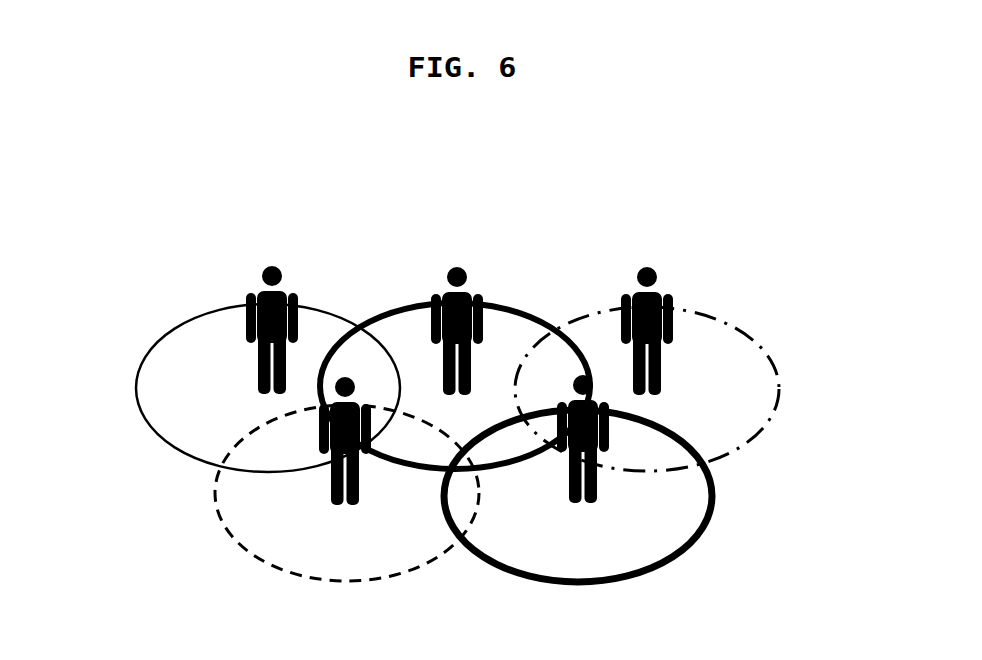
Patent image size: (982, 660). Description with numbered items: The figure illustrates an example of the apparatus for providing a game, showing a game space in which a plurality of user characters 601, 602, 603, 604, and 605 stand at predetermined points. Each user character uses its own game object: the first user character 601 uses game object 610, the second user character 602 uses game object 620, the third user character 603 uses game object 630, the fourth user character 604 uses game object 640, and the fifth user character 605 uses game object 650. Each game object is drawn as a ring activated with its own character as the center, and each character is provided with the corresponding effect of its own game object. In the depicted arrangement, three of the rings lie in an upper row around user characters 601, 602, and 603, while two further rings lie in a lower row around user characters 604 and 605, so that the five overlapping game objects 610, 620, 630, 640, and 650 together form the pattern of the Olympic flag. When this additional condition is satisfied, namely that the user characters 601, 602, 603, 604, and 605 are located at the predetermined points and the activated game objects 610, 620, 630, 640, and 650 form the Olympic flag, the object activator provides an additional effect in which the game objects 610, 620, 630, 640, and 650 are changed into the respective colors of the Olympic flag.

The user character 601 is at (272, 266).
The user character 602 is at (457, 267).
The user character 603 is at (647, 267).
The user character 604 is at (340, 506).
The user character 605 is at (590, 506).
The game object 610 is at (177, 328).
The game object 620 is at (400, 305).
The game object 630 is at (753, 332).
The game object 640 is at (215, 493).
The game object 650 is at (715, 488).